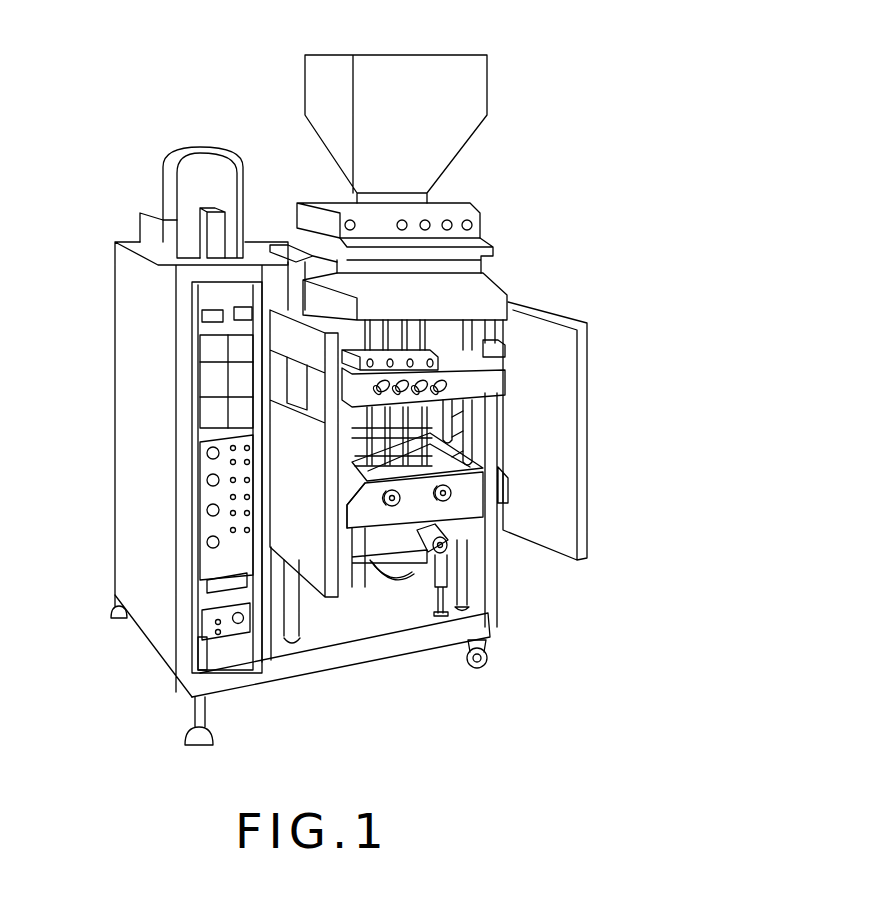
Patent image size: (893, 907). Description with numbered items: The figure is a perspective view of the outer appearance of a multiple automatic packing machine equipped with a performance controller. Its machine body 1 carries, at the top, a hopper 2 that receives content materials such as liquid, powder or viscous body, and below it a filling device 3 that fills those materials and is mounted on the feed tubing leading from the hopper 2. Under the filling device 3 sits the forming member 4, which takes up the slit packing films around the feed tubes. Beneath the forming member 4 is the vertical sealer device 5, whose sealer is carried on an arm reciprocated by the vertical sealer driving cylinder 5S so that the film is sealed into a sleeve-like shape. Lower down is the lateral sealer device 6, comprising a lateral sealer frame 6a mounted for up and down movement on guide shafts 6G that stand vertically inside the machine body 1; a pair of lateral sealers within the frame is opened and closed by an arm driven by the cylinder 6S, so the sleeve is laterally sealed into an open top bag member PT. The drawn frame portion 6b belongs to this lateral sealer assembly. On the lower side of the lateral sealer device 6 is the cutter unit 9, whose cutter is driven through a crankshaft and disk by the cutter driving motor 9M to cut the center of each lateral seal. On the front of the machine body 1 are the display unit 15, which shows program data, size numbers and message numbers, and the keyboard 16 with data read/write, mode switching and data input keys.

The machine body 1 is at (520, 252).
The hopper 2 is at (466, 89).
The filling device 3 is at (480, 210).
The forming member 4 is at (507, 287).
The vertical sealer driving cylinder 5S is at (470, 380).
The vertical sealer device 5 is at (507, 393).
The guide shafts 6G is at (480, 440).
The open top type bag member PT is at (392, 452).
The upper tray of sealing unit 6b is at (353, 463).
The lateral sealer device 6 is at (466, 503).
The lateral sealer frame 6a is at (362, 505).
The cylinder 6S is at (452, 493).
The cutter driving motor 9M is at (450, 550).
The cutter unit 9 is at (393, 572).
The display unit 15 is at (217, 585).
The keyboard 16 is at (210, 628).